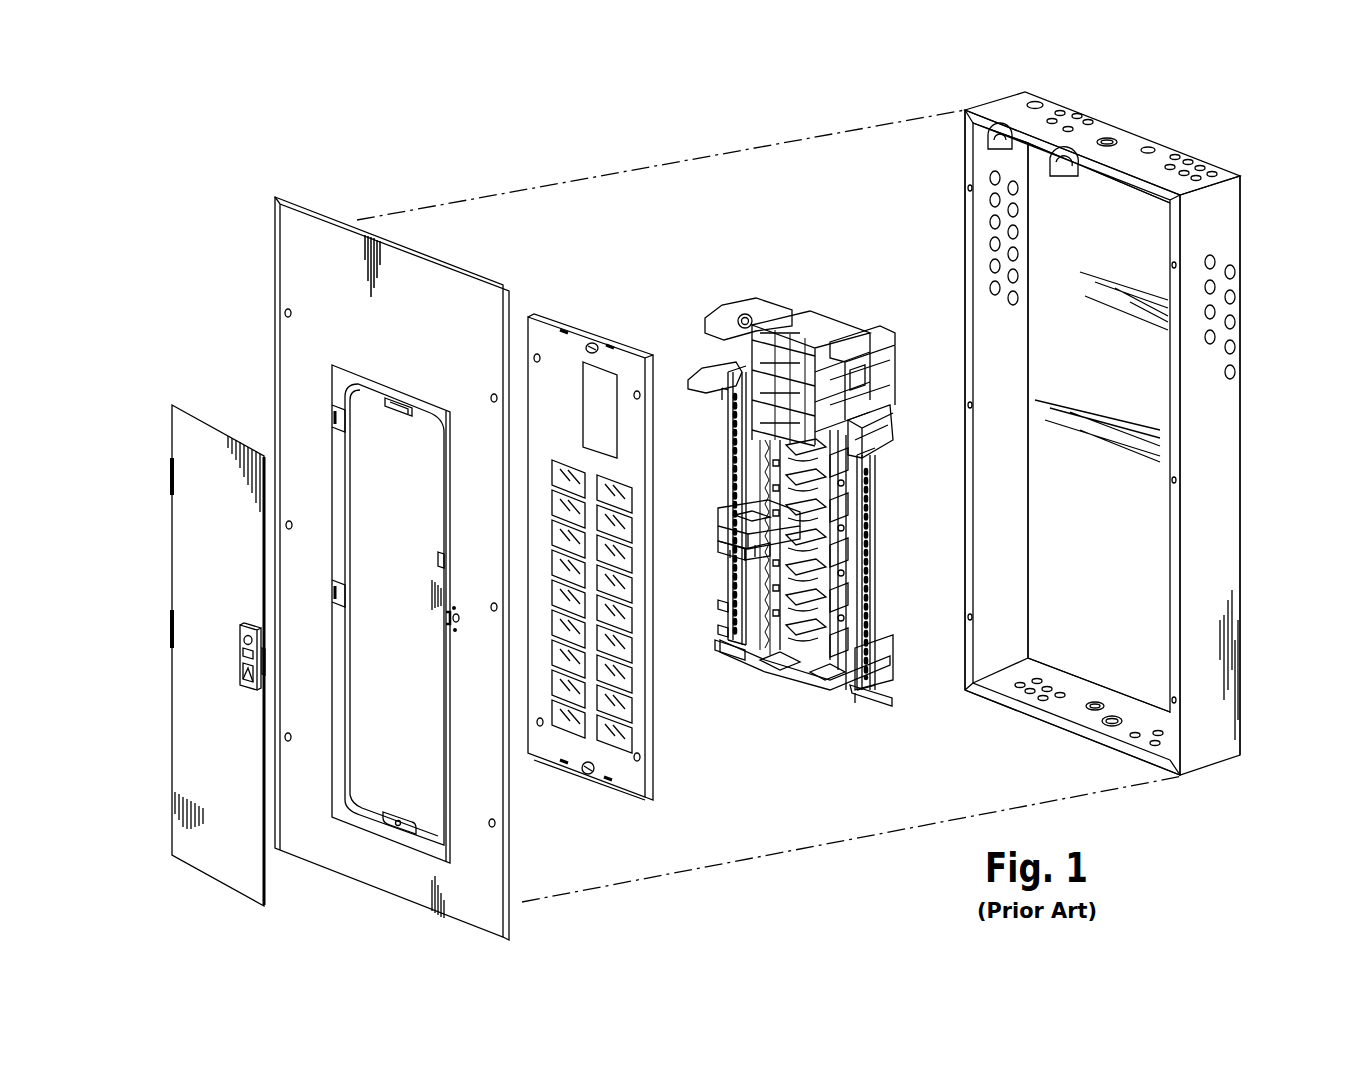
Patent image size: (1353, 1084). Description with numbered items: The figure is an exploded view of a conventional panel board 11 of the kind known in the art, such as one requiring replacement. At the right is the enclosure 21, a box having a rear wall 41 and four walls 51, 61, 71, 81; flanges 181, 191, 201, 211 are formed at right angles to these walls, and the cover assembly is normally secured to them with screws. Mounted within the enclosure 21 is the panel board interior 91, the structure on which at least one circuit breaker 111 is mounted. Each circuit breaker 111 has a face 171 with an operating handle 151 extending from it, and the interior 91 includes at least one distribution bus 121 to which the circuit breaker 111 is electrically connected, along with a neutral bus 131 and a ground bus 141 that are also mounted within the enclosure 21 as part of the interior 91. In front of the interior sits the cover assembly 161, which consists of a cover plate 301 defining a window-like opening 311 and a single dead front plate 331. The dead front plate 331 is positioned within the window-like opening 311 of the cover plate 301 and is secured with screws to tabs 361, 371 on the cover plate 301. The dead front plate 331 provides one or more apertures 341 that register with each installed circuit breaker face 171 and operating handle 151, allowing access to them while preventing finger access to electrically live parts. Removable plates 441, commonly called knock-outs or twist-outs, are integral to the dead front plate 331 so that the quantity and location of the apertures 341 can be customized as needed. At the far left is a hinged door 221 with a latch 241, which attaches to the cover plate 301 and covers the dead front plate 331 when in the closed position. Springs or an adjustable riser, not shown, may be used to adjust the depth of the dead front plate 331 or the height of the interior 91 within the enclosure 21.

The panel board 11 is at (298, 113).
The enclosure 21 is at (958, 96).
The rear wall 41 is at (1135, 430).
The wall 51 is at (1215, 503).
The wall 61 is at (1130, 150).
The wall 71 is at (1000, 372).
The wall 81 is at (1120, 732).
The panel board interior 91 is at (775, 312).
The circuit breaker 111 is at (730, 520).
The distribution bus 121 is at (800, 645).
The neutral bus 131 is at (880, 460).
The ground bus 141 is at (728, 412).
The operating handle 151 is at (730, 555).
The cover assembly 161 is at (135, 228).
The face 171 is at (725, 540).
The flange 181 is at (1170, 585).
The flange 191 is at (1143, 187).
The flange 201 is at (968, 270).
The flange 211 is at (1053, 718).
The hinged door 221 is at (165, 527).
The latch 241 is at (240, 668).
The cover plate 301 is at (300, 267).
The window-like opening 311 is at (363, 418).
The dead front plate 331 is at (573, 358).
The apertures 341 is at (575, 625).
The tab 361 is at (403, 412).
The tab 371 is at (405, 812).
The removable plates 441 is at (615, 705).